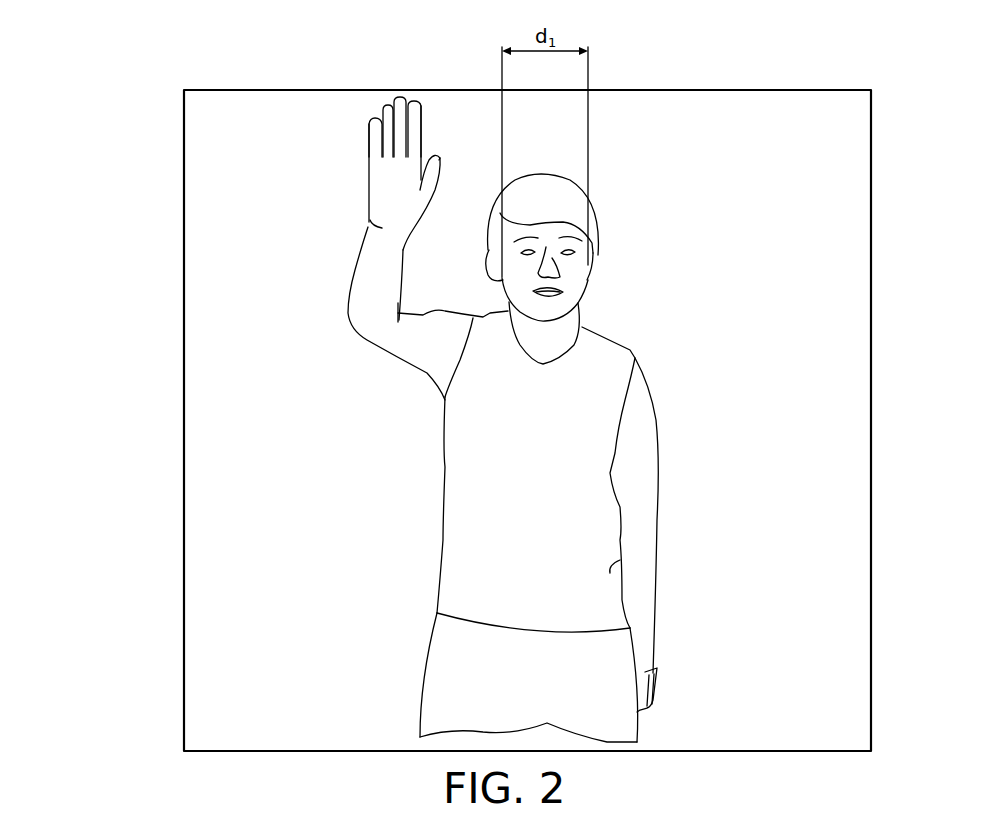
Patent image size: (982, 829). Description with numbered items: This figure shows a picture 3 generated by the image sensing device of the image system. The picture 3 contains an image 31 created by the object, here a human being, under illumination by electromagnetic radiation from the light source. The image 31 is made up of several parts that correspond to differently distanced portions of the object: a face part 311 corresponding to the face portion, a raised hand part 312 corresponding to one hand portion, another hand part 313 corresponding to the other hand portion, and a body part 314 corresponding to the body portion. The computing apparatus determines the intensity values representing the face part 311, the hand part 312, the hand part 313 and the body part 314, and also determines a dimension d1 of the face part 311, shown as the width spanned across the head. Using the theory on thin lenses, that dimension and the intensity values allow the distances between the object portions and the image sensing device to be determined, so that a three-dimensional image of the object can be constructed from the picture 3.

The picture 3 is at (93, 167).
The image 31 is at (649, 383).
The face part 311 is at (583, 275).
The hand part 312 is at (384, 96).
The hand part 313 is at (643, 672).
The body part 314 is at (565, 516).